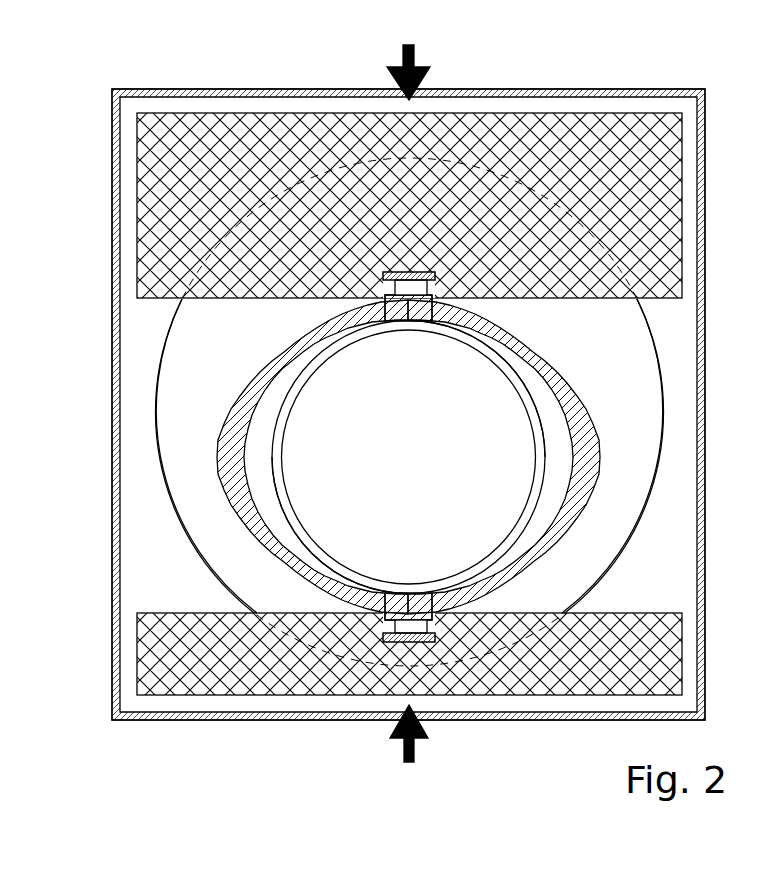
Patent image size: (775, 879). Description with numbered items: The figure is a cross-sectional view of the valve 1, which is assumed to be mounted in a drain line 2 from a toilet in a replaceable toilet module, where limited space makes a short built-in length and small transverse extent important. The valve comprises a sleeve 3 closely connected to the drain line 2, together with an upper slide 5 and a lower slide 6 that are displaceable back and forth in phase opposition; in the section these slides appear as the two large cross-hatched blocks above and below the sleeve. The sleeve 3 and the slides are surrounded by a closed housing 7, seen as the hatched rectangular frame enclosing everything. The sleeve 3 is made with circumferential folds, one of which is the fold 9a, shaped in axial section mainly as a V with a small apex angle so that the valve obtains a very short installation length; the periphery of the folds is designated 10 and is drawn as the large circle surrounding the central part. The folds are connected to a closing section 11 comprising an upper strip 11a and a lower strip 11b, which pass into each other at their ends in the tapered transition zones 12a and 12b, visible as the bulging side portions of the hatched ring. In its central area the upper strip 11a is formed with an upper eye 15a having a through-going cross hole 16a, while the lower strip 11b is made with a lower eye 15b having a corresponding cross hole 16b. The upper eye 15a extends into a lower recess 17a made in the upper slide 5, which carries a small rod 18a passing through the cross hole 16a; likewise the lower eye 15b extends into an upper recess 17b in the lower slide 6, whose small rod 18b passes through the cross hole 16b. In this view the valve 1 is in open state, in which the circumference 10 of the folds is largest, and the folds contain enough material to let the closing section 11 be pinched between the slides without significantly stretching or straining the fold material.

The valve 1 is at (713, 158).
The drain line 2 is at (292, 508).
The sleeve 3 is at (650, 390).
The upper slide 5 is at (250, 128).
The lower slide 6 is at (285, 696).
The housing 7 is at (157, 722).
The circumferential fold 9a is at (175, 432).
The periphery of the folds 10 is at (650, 492).
The closing section 11 is at (312, 348).
The upper strip 11a is at (515, 370).
The lower strip 11b is at (243, 509).
The tapered transition zone 12a is at (246, 416).
The tapered transition zone 12b is at (588, 462).
The upper eye 15a is at (436, 277).
The lower eye 15b is at (432, 642).
The cross hole 16a is at (382, 300).
The cross hole 16b is at (490, 592).
The lower recess 17a is at (430, 322).
The upper recess 17b is at (318, 598).
The small rod 18a is at (410, 287).
The small rod 18b is at (405, 615).